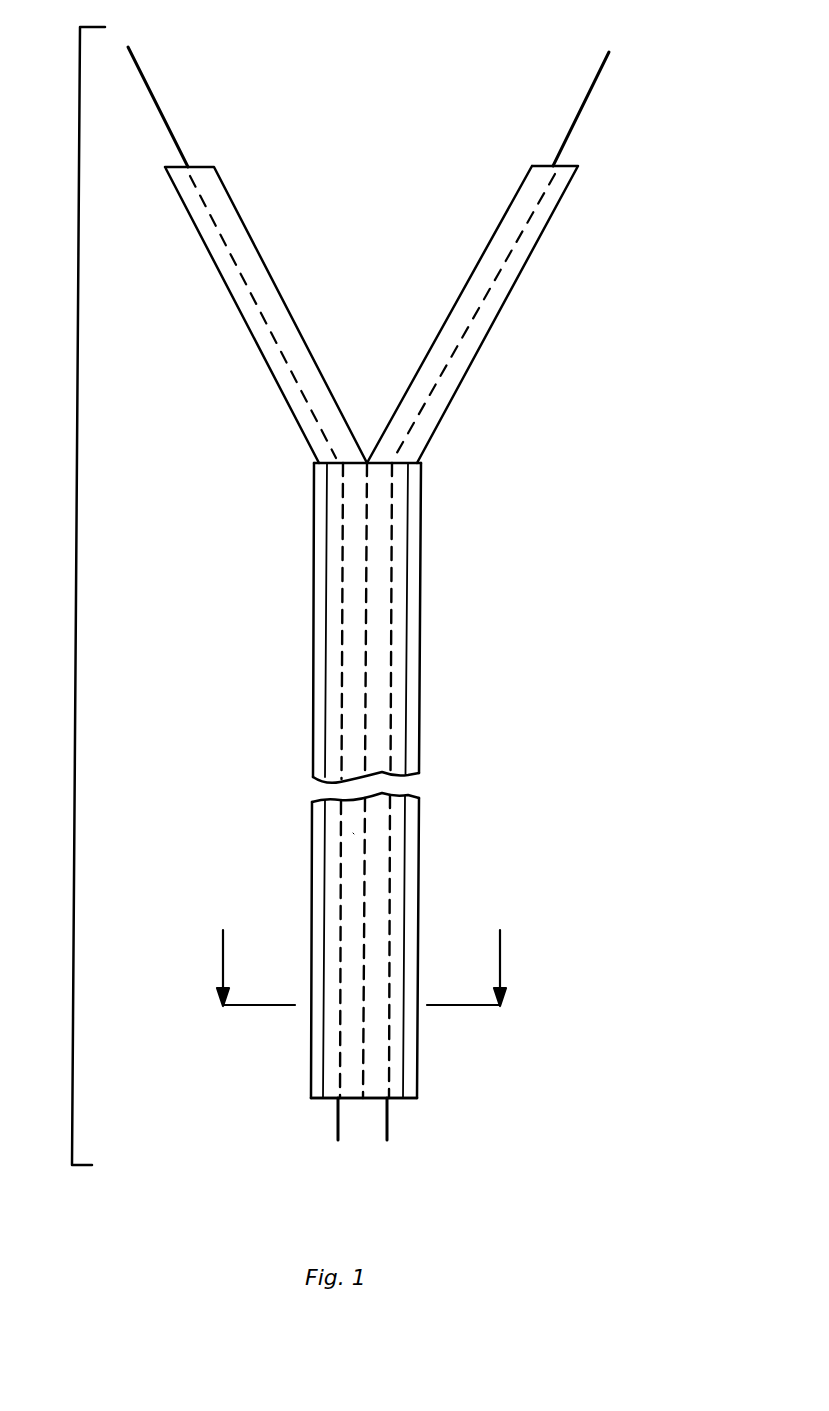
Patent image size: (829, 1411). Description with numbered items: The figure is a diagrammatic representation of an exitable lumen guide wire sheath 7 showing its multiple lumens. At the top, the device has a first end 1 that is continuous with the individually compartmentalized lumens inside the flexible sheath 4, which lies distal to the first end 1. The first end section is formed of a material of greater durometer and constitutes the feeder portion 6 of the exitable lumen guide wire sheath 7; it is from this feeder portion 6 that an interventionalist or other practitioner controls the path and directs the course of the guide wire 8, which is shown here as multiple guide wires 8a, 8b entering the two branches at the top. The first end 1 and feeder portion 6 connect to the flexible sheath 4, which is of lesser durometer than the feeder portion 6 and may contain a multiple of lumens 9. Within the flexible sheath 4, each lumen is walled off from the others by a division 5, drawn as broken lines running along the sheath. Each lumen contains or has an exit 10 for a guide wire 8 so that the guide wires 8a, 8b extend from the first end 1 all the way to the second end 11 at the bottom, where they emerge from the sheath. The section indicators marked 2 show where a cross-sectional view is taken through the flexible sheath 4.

The first end 1 is at (203, 167).
The section line 2- 2 is at (362, 952).
The flexible sheath 4 is at (421, 540).
The division 5 is at (343, 690).
The feeder portion 6 is at (505, 218).
The exitable lumen guide wire sheath 7 is at (76, 640).
The guide wire 8 is at (325, 760).
The guide wire 8a is at (145, 80).
The guide wire 8b is at (587, 100).
The lumens 9 is at (380, 850).
The exit 10 is at (408, 615).
The second end 11 is at (313, 1100).